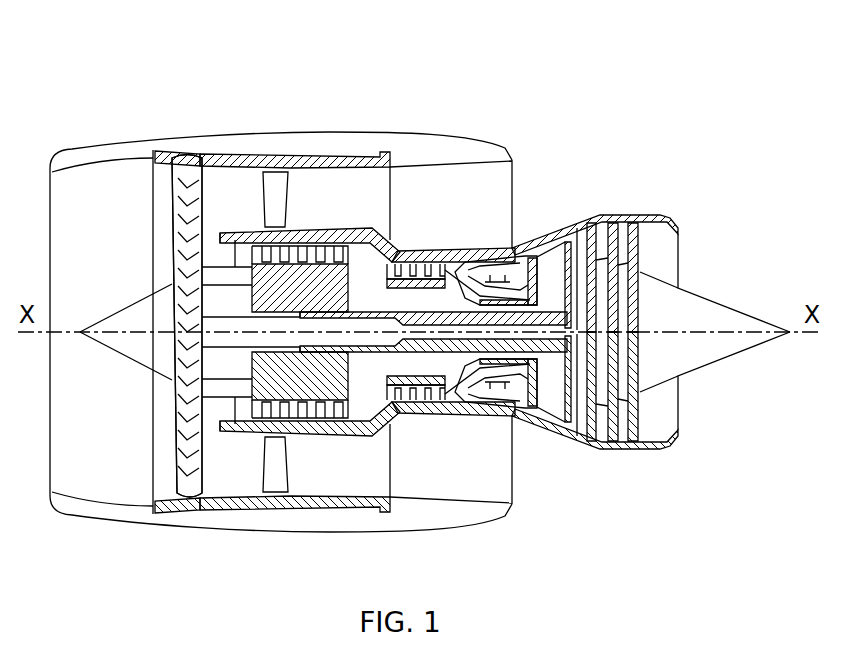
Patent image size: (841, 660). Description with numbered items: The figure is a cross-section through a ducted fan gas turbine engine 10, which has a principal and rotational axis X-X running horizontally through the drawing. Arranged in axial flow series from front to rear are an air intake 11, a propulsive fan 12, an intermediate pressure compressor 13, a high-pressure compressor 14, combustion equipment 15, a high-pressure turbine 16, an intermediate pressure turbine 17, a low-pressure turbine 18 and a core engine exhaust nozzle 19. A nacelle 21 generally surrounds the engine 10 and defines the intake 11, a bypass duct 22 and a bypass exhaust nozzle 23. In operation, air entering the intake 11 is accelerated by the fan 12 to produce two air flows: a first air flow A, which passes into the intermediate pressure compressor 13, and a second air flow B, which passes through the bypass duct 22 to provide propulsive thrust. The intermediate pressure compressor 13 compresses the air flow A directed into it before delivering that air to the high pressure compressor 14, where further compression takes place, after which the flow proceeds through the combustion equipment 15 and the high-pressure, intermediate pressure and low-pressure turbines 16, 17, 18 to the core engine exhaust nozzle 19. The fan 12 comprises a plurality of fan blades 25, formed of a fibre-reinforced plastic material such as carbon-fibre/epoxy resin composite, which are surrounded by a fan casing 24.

The ducted fan gas turbine engine 10 is at (98, 106).
The air intake 11 is at (100, 165).
The propulsive fan 12 is at (179, 457).
The intermediate pressure compressor 13 is at (318, 416).
The high-pressure compressor 14 is at (432, 268).
The combustion equipment 15 is at (478, 396).
The high-pressure turbine 16 is at (527, 418).
The intermediate pressure turbine 17 is at (572, 245).
The low-pressure turbine 18 is at (580, 437).
The core engine exhaust nozzle 19 is at (672, 215).
The nacelle 21 is at (312, 514).
The bypass duct 22 is at (438, 201).
The bypass exhaust nozzle 23 is at (505, 147).
The fan casing 24 is at (190, 150).
The fan blades 25 is at (205, 508).
The first air flow A is at (226, 250).
The second air flow B is at (236, 197).